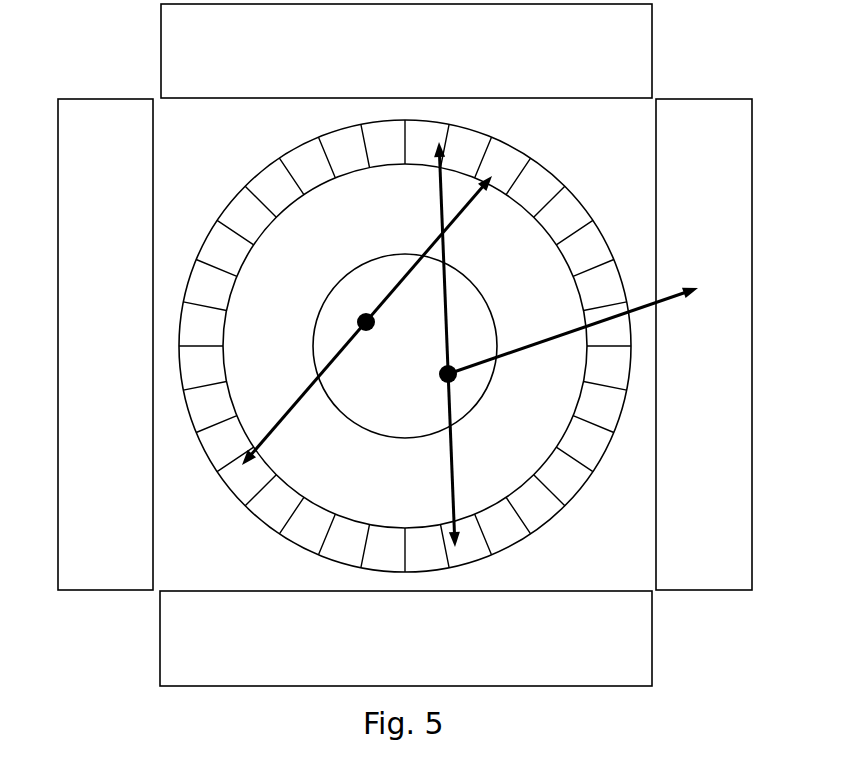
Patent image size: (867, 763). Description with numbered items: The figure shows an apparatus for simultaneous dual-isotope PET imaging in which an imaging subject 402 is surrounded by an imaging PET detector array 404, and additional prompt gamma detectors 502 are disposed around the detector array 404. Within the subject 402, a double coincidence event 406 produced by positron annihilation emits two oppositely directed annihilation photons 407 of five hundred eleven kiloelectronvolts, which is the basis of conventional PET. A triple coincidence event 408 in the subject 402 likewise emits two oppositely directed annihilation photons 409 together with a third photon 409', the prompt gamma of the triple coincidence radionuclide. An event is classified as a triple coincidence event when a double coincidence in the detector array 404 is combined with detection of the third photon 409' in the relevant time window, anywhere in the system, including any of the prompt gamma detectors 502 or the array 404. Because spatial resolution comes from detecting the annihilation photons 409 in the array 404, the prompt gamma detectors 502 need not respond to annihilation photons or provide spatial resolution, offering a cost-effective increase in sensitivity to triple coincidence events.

The prompt gamma detectors 502 is at (405, 345).
The imaging PET detector array 404 is at (222, 164).
The imaging subject 402 is at (405, 346).
The double coincidence event 406 is at (360, 316).
The triple coincidence event 408 is at (456, 374).
The 511 keV photons 407 is at (494, 176).
The 511 keV annihilation photons 409 is at (493, 343).
The third photon 409' is at (638, 329).